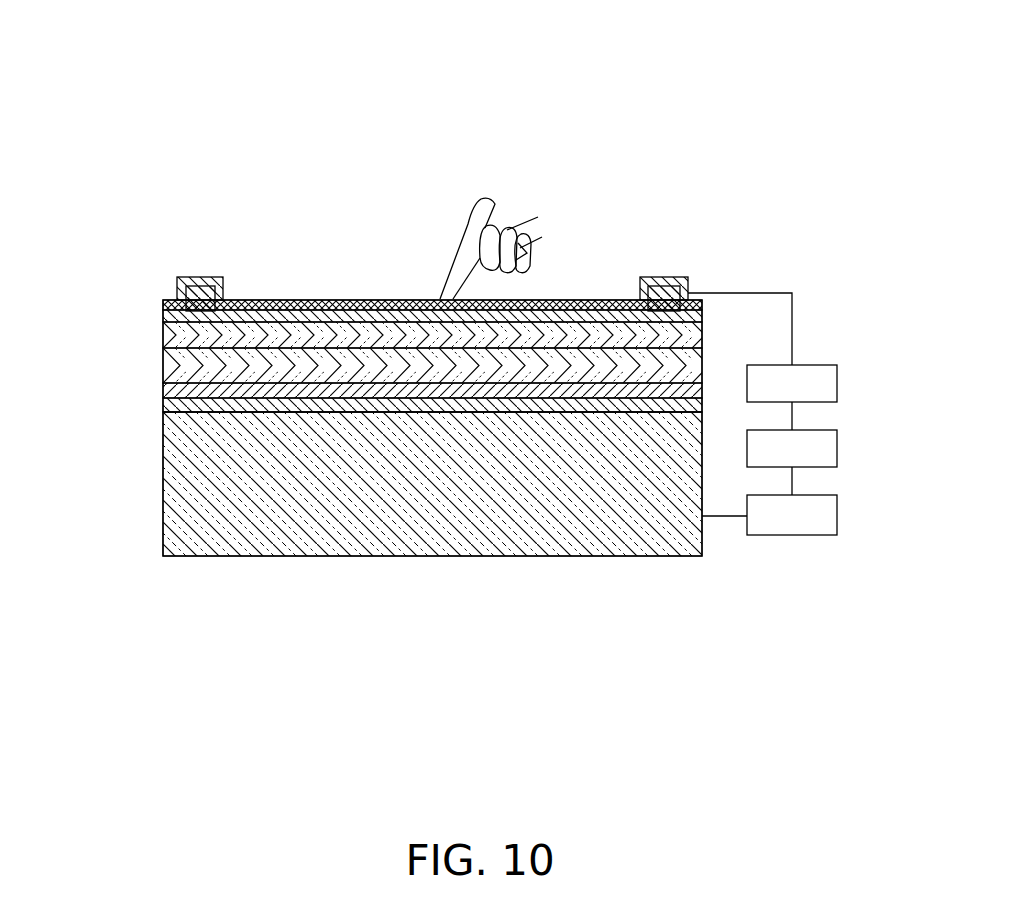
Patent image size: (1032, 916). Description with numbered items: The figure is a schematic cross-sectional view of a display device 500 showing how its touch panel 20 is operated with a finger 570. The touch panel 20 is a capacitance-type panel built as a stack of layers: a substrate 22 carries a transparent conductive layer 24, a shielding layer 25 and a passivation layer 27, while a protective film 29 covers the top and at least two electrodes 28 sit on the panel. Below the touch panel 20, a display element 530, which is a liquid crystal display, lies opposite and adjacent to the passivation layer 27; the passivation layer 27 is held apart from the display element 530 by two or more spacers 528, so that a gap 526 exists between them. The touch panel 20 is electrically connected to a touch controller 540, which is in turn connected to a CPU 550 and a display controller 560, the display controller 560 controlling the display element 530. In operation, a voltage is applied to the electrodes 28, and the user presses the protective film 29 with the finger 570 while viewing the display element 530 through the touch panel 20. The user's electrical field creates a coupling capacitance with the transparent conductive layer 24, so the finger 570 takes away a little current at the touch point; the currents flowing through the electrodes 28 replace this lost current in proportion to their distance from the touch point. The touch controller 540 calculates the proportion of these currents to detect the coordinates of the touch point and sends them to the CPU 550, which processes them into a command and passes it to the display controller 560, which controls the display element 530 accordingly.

The display device 500 is at (447, 57).
The touch panel 20 is at (88, 258).
The electrodes 28 is at (180, 278).
The protective film 29 is at (163, 305).
The transparent conductive layer 24 is at (163, 316).
The substrate 22 is at (163, 335).
The shielding layer 25 is at (163, 366).
The passivation layer 27 is at (163, 390).
The spacers 528 is at (163, 405).
The gap 526 is at (227, 408).
The display element 530 is at (163, 490).
The touch controller 540 is at (838, 380).
The CPU 550 is at (838, 447).
The display controller 560 is at (838, 515).
The finger 570 is at (463, 225).